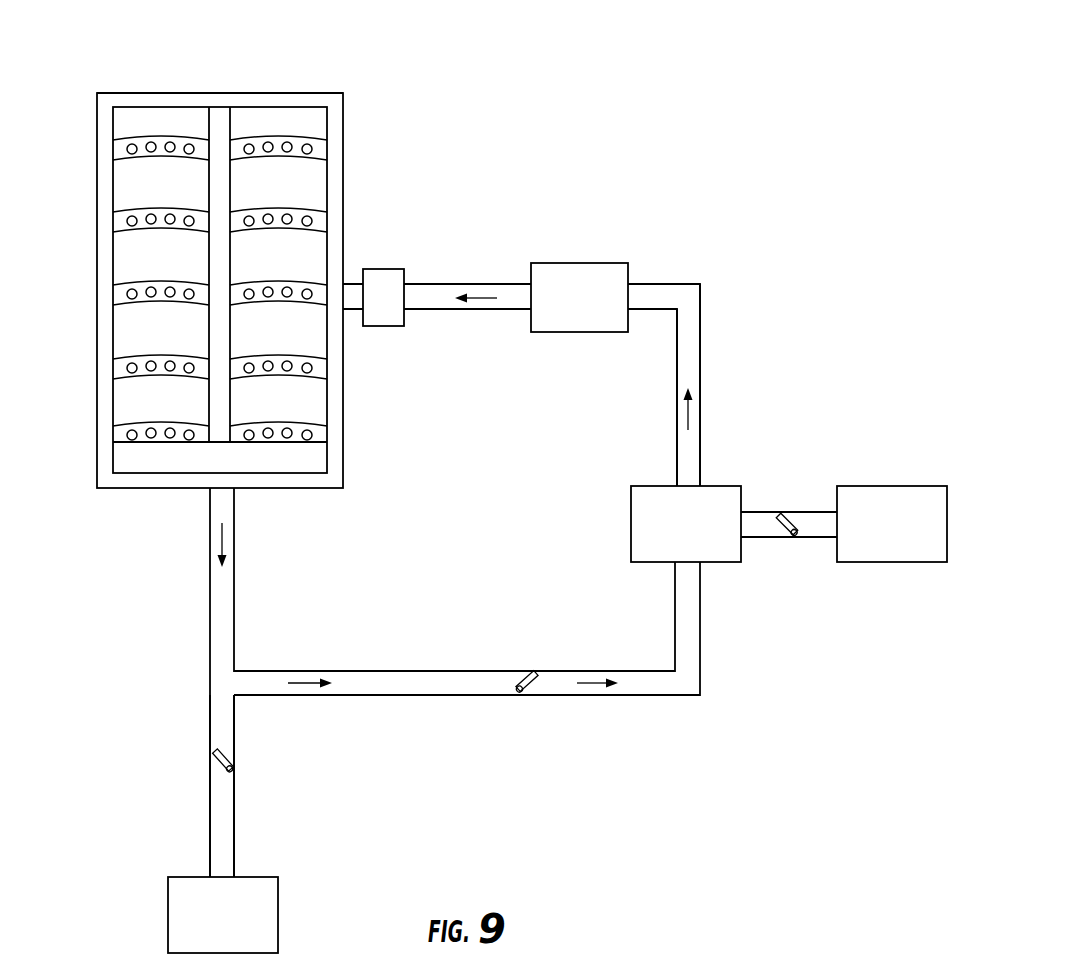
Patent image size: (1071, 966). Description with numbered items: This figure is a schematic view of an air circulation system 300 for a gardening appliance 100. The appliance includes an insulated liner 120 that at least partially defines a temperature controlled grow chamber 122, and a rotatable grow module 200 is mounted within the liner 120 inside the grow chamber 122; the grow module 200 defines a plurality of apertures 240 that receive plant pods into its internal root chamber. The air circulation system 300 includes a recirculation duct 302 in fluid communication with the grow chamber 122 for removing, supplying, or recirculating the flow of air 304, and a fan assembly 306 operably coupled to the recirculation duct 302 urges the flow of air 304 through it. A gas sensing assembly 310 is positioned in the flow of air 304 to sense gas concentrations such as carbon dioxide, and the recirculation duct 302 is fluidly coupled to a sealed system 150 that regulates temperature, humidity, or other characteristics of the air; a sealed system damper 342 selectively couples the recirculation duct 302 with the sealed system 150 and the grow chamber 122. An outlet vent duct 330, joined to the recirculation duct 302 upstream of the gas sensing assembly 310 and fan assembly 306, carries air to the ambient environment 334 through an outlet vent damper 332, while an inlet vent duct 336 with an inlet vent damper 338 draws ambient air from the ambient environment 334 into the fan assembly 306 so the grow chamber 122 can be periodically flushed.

The gardening appliance 100 is at (123, 83).
The insulated liner 120 is at (197, 93).
The grow chamber 122 is at (266, 88).
The grow module 200 is at (302, 108).
The apertures 240 is at (132, 291).
The air circulation system 300 is at (757, 133).
The sealed system 150 is at (597, 313).
The gas sensing assembly 310 is at (386, 340).
The flow of air 304 is at (688, 418).
The fan assembly 306 is at (704, 536).
The ambient environment 334 is at (910, 536).
The inlet vent duct 336 is at (825, 512).
The inlet vent damper 338 is at (803, 512).
The recirculation duct 302 is at (548, 670).
The sealed system damper 342 is at (537, 686).
The outlet vent duct 330 is at (210, 825).
The outlet vent damper 332 is at (228, 755).